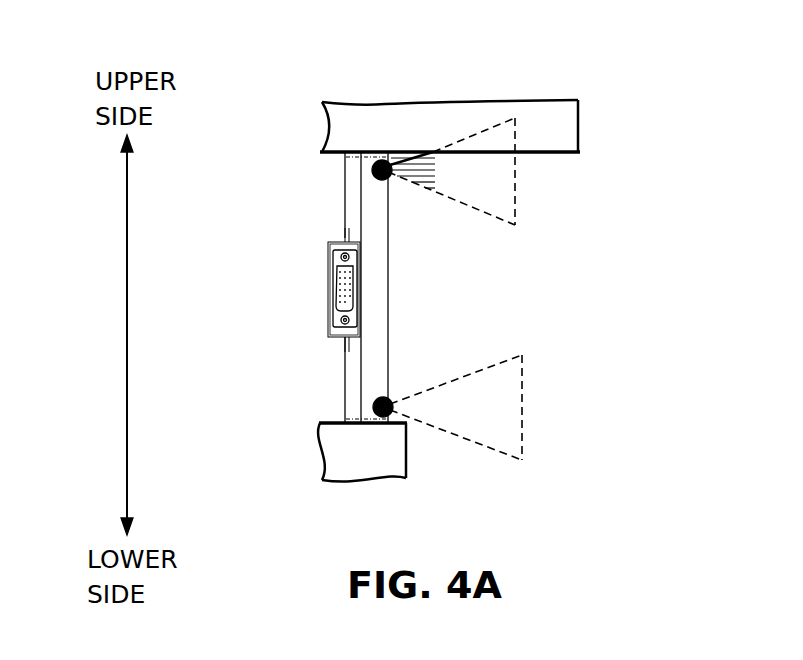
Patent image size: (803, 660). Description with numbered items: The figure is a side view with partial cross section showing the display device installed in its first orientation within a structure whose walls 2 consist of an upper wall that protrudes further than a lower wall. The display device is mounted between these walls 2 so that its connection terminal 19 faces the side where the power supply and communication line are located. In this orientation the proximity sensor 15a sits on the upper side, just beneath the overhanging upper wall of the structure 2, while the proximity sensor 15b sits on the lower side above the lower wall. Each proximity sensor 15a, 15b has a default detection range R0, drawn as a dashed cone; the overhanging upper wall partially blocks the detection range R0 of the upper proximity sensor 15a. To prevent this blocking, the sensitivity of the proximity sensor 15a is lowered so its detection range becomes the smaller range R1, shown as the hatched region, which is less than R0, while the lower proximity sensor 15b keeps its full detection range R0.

The structure wall 2 is at (532, 100).
The proximity sensor 15a is at (372, 170).
The proximity sensor 15b is at (373, 393).
The connection terminal 19 is at (328, 272).
The reduced detection range R1 is at (394, 174).
The detection range R0 is at (499, 192).